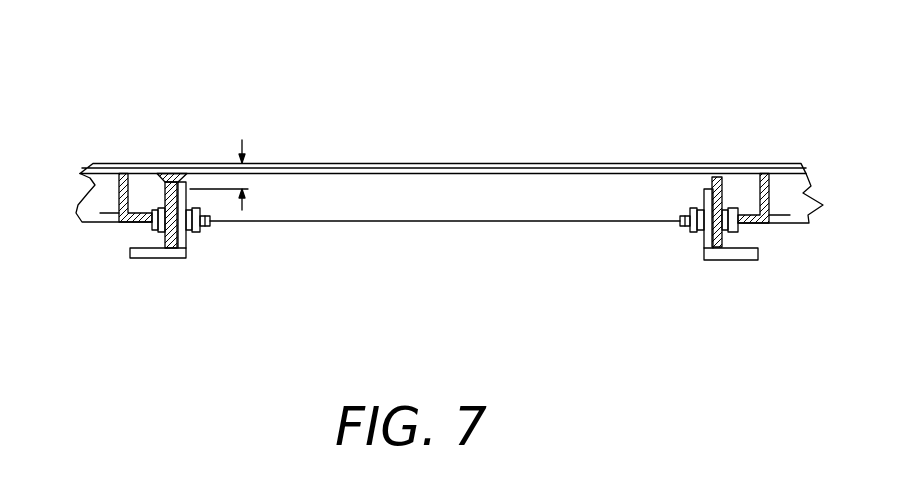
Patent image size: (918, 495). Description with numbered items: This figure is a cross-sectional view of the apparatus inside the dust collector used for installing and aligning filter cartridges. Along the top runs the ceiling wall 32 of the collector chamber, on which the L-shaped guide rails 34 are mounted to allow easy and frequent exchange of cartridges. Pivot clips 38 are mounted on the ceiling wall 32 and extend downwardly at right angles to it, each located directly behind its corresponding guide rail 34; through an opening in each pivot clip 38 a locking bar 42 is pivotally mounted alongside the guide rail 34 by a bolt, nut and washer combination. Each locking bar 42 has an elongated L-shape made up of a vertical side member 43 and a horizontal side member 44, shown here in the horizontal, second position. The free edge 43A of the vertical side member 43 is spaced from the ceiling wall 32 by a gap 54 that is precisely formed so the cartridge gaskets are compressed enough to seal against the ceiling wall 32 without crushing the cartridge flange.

The ceiling wall 32 is at (480, 173).
The guide rail 34 is at (102, 220).
The pivot clip 38 is at (152, 172).
The locking bar 42 is at (190, 260).
The vertical side member 43 is at (190, 252).
The free edge of the vertical side member 43A is at (192, 178).
The horizontal side member 44 is at (147, 258).
The gap 54 is at (240, 180).